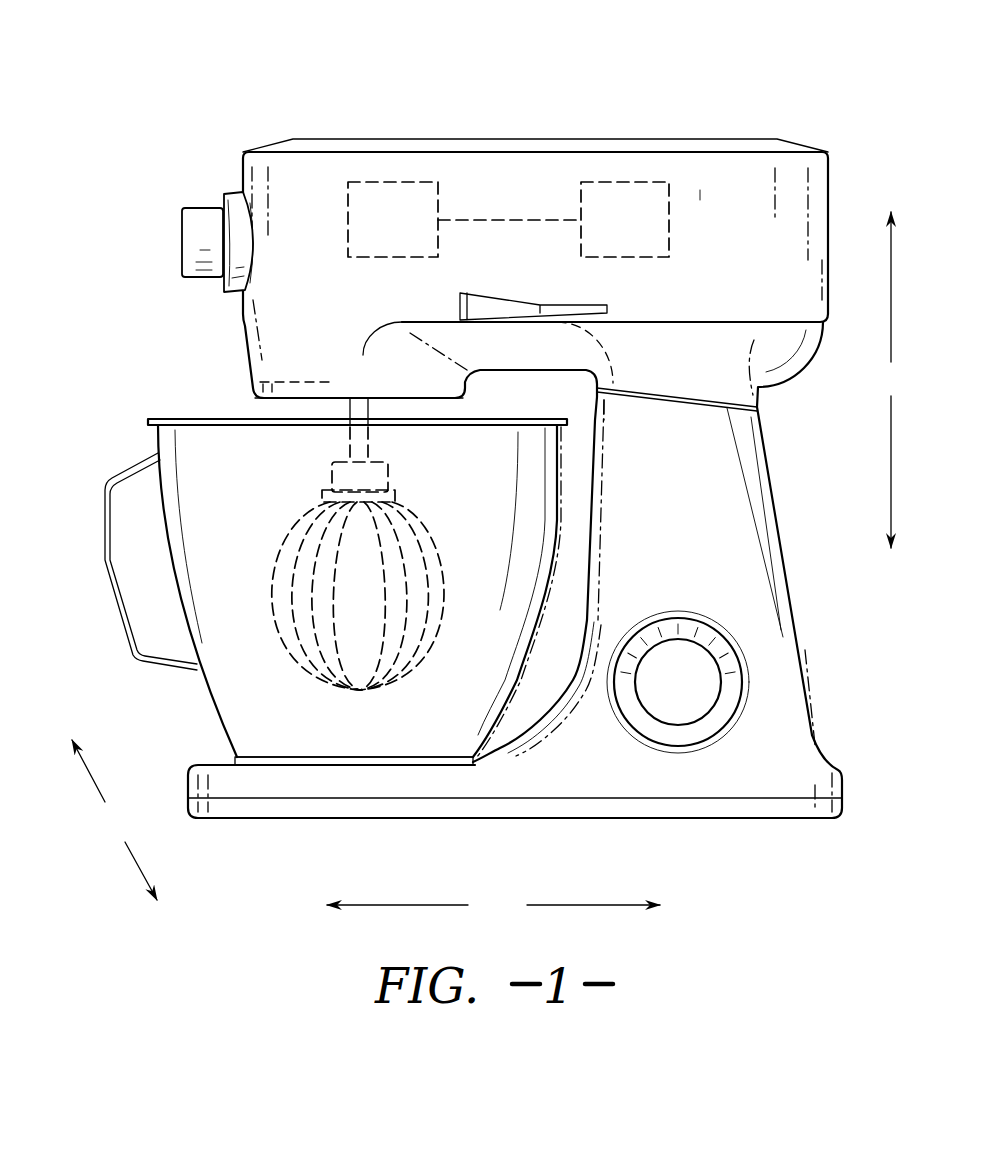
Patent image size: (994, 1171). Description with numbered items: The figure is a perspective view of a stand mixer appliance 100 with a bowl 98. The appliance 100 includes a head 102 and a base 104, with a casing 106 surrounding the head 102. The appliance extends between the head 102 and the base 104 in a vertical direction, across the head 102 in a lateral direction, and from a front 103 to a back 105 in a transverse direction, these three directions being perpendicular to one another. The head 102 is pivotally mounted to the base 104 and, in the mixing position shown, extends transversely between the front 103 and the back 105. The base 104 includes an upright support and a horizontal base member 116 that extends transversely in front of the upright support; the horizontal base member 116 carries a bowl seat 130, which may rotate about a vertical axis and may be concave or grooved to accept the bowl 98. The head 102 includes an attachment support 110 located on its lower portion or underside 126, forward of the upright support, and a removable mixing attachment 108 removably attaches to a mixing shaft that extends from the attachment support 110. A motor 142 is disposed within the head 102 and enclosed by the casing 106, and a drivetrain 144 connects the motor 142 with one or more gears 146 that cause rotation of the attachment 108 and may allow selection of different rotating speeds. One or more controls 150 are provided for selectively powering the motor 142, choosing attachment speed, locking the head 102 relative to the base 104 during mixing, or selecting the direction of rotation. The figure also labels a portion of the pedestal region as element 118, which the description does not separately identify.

The stand mixer appliance 100 is at (245, 78).
The head 102 is at (578, 139).
The front 103 is at (242, 318).
The base 104 is at (784, 546).
The back 105 is at (831, 182).
The casing 106 is at (686, 208).
The removable mixing attachment 108 is at (285, 552).
The attachment support 110 is at (260, 384).
The horizontal base member 116 is at (288, 820).
The pedestal front wall 118 is at (546, 753).
The underside of head 126 is at (506, 376).
The bowl seat 130 is at (234, 754).
The motor 142 is at (634, 207).
The drivetrain 144 is at (484, 218).
The gears 146 is at (383, 207).
The controls 150 is at (490, 309).
The bowl 98 is at (160, 492).